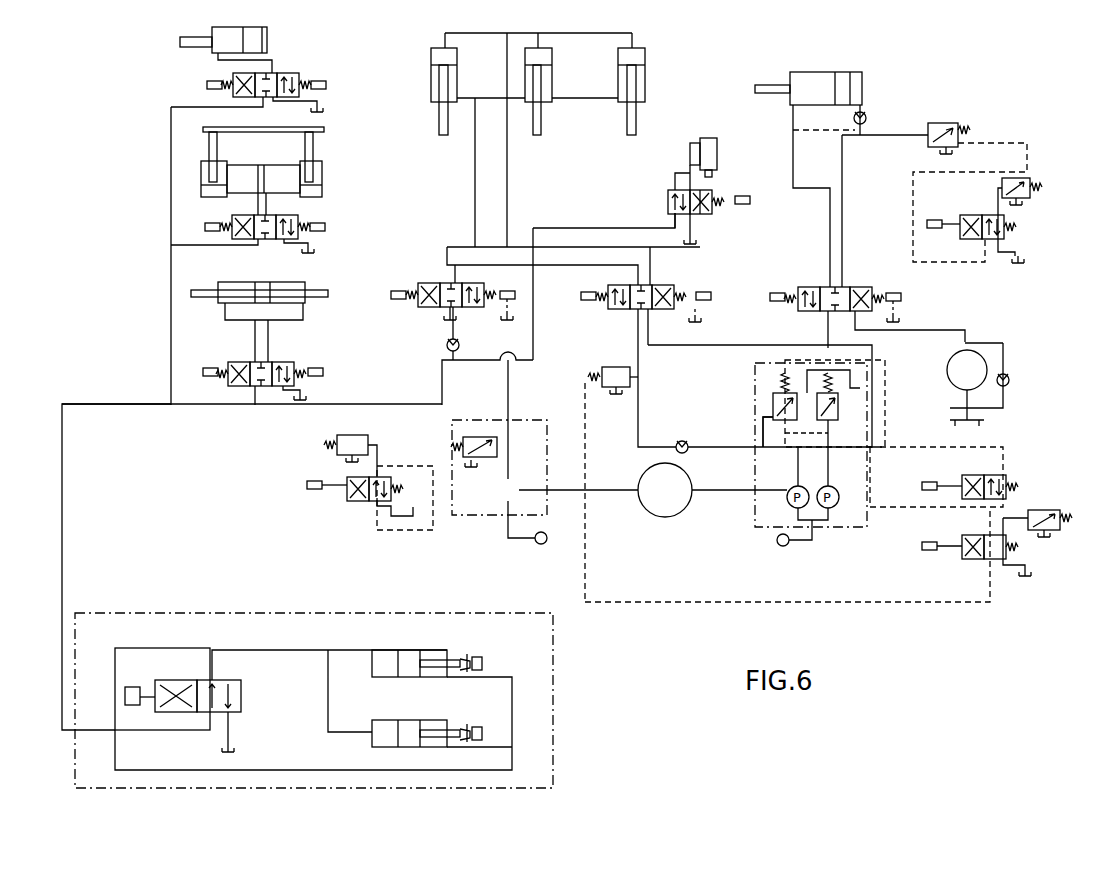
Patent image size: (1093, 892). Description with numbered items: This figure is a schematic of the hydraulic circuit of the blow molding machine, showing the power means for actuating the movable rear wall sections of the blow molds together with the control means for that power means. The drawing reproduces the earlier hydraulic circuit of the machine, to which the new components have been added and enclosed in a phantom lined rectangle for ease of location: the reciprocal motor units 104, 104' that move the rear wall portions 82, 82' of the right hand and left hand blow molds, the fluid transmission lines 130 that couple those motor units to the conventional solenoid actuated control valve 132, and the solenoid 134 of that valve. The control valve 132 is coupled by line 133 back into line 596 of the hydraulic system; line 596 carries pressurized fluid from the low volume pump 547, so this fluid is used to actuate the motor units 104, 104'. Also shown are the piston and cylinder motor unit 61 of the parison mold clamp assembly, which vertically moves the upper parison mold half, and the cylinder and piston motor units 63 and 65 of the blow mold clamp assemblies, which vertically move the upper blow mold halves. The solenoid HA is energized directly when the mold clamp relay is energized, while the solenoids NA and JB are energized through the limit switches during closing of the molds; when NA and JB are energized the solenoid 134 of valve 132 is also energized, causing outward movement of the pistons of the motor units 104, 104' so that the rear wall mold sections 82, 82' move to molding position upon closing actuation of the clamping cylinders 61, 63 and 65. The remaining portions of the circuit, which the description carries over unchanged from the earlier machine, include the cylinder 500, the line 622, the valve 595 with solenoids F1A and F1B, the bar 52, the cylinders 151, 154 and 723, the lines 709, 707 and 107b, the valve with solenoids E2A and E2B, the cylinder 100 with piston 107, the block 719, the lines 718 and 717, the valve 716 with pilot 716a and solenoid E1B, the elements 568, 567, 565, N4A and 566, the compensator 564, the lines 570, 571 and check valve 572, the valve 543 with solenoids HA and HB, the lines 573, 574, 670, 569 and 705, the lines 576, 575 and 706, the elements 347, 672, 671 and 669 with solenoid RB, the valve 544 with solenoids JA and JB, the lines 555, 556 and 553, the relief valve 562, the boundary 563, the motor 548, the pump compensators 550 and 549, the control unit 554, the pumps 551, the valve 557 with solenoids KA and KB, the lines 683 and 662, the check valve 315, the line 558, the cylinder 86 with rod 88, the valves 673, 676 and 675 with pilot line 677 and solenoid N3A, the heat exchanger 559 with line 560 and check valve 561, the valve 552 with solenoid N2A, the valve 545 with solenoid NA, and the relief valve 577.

The hydraulic cylinder 500 is at (220, 30).
The conduit 622 is at (272, 45).
The solenoid valve 595 is at (328, 106).
The solenoid F1A is at (207, 84).
The solenoid F1B is at (324, 82).
The cross bar 52 is at (324, 130).
The cylinder 151 is at (201, 190).
The cylinder 154 is at (322, 188).
The cylinder 723 is at (260, 168).
The conduit 709 is at (268, 200).
The line 596 is at (171, 218).
The line 133 is at (120, 404).
The solenoid valve 707 is at (245, 245).
The drain 107b is at (314, 246).
The solenoid E2A is at (205, 227).
The solenoid E2B is at (325, 227).
The cylinder 100 is at (284, 282).
The piston 107 is at (262, 270).
The cylinder block 719 is at (225, 310).
The conduit 718 is at (255, 330).
The solenoid valve 716 is at (266, 362).
The solenoid 716a is at (212, 362).
The solenoid E1B is at (323, 373).
The conduit 717 is at (255, 386).
The pressure relief valve / dashed boundary 568 is at (337, 435).
The conduit 567 is at (377, 452).
The solenoid valve 565 is at (376, 482).
The solenoid N4A is at (308, 481).
The valve section 566 is at (360, 502).
The pressure compensator 564 is at (474, 437).
The conduit 570 is at (508, 398).
The conduit 571 is at (516, 355).
The check valve 572 is at (453, 345).
The solenoid valve 543 is at (418, 283).
The solenoid HA is at (391, 295).
The solenoid HB is at (516, 291).
The conduit 573 is at (447, 247).
The conduit 574 is at (548, 222).
The conduit 670 is at (650, 247).
The conduit 569 is at (663, 252).
The conduit 705 is at (675, 228).
The conduit 576 is at (576, 33).
The conduit 575 is at (507, 180).
The conduit 706 is at (475, 178).
The cylinder and piston motor unit 63 is at (431, 71).
The piston and cylinder motor unit 61 is at (552, 82).
The cylinder and piston motor unit 65 is at (645, 80).
The cylinder 347 is at (717, 150).
The cylinder 672 is at (690, 155).
The solenoid valve 671 is at (670, 188).
The conduit 669 is at (700, 195).
The solenoid RB is at (748, 196).
The solenoid valve 544 is at (618, 285).
The solenoid JA is at (581, 295).
The solenoid JB is at (707, 297).
The conduit 555 is at (674, 348).
The conduit 556 is at (827, 327).
The conduit 553 is at (640, 407).
The relief valve 562 is at (603, 369).
The boundary 563 is at (587, 463).
The motor 548 is at (655, 515).
The low volume pump 547 is at (546, 538).
The pump compensator 550 is at (773, 406).
The pump compensator 549 is at (829, 420).
The control unit 554 is at (884, 388).
The pumps 551 is at (886, 429).
The solenoid valve 557 is at (849, 287).
The solenoid KA is at (776, 293).
The solenoid KB is at (901, 297).
The conduit 683 is at (830, 240).
The conduit 662 is at (920, 141).
The check valve 315 is at (865, 118).
The conduit 558 is at (930, 330).
The cylinder 86 is at (806, 72).
The piston rod 88 is at (778, 85).
The pressure reducing valve 673 is at (943, 123).
The pilot line 677 is at (1002, 143).
The relief valve 676 is at (1030, 182).
The solenoid valve 675 is at (967, 215).
The solenoid N3A is at (938, 211).
The heat exchanger 559 is at (985, 344).
The conduit 560 is at (1010, 360).
The check valve 561 is at (1013, 378).
The solenoid valve 552 is at (1002, 474).
The solenoid N2A is at (922, 486).
The solenoid valve 545 is at (980, 535).
The solenoid NA is at (922, 546).
The relief valve 577 is at (1048, 510).
The fluid transmission line 130 is at (252, 649).
The control valve 132 is at (160, 680).
The solenoid 134 is at (125, 687).
The reciprocal motor unit 104 is at (416, 650).
The rear wall portion 82 is at (484, 648).
The reciprocal motor unit 104' is at (390, 739).
The rear wall portion 82' is at (479, 718).